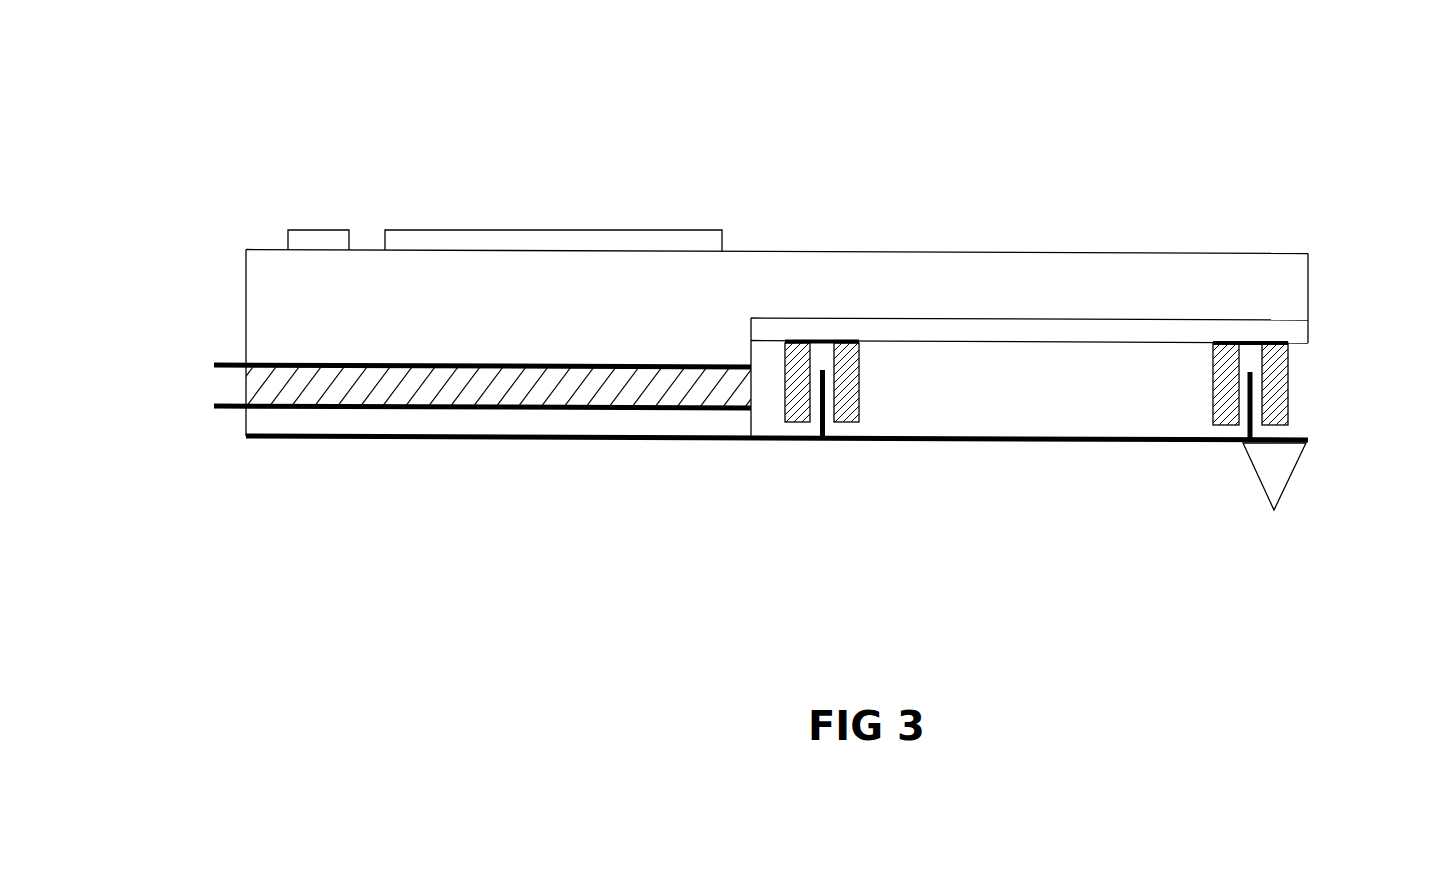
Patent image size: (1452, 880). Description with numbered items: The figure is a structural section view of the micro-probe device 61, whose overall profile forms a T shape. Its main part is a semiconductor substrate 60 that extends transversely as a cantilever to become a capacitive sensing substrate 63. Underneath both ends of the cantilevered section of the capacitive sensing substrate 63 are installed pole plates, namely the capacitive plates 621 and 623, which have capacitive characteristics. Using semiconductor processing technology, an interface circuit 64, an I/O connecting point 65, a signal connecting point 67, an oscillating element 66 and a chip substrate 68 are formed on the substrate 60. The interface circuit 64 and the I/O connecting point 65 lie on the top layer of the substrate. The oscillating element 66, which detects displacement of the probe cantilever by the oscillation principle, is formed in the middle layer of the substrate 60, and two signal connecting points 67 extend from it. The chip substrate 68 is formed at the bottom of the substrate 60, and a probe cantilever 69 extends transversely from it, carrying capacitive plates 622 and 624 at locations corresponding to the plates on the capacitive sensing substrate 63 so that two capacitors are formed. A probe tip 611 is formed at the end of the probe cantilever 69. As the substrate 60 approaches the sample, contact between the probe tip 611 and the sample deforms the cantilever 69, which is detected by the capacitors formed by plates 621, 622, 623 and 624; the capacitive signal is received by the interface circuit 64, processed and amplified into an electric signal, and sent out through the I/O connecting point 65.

The semiconductor substrate 60 is at (330, 318).
The connector device 61 is at (758, 170).
The probe tip 611 is at (1276, 462).
The capacitive plate 621 is at (1227, 377).
The capacitive plate 622 is at (1242, 422).
The capacitive plate 623 is at (798, 415).
The capacitive plate 624 is at (828, 362).
The capacitive sensing substrate 63 is at (1030, 275).
The interface circuit 64 is at (603, 243).
The I/O connecting point 65 is at (318, 242).
The oscillating element 66 is at (330, 393).
The signal connecting point 67 is at (216, 367).
The chip substrate 68 is at (542, 418).
The probe cantilever 69 is at (635, 438).